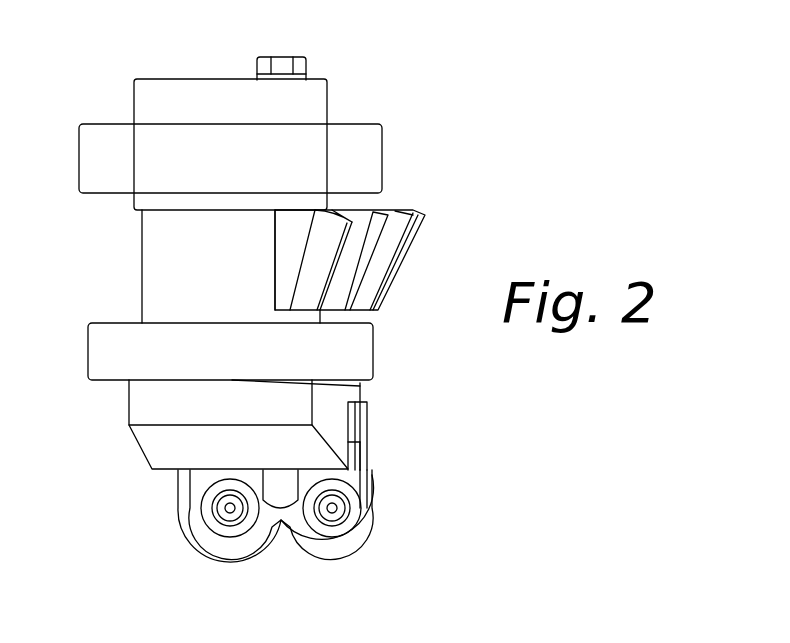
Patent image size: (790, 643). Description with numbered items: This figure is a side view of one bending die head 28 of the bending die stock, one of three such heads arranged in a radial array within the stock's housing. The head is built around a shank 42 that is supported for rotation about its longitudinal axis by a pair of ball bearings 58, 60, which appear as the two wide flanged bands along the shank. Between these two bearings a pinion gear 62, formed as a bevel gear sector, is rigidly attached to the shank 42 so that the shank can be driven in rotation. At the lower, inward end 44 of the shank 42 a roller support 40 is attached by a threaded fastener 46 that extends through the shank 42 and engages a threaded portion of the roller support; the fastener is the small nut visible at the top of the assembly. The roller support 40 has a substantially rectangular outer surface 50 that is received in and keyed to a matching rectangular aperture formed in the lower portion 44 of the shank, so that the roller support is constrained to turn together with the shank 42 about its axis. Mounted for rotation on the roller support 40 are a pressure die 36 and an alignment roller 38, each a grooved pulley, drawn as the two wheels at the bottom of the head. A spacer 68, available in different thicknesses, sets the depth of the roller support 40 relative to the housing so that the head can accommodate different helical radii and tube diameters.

The bending die head 28 is at (363, 90).
The pressure die 36 is at (343, 562).
The alignment roller 38 is at (218, 560).
The roller support 40 is at (343, 482).
The shank 42 is at (142, 262).
The lower end 44 is at (148, 440).
The threaded fastener 46 is at (277, 63).
The outer surface 50 is at (352, 452).
The ball bearing 58 is at (377, 157).
The ball bearing 60 is at (366, 347).
The pinion gear 62 is at (412, 250).
The spacer 68 is at (368, 413).